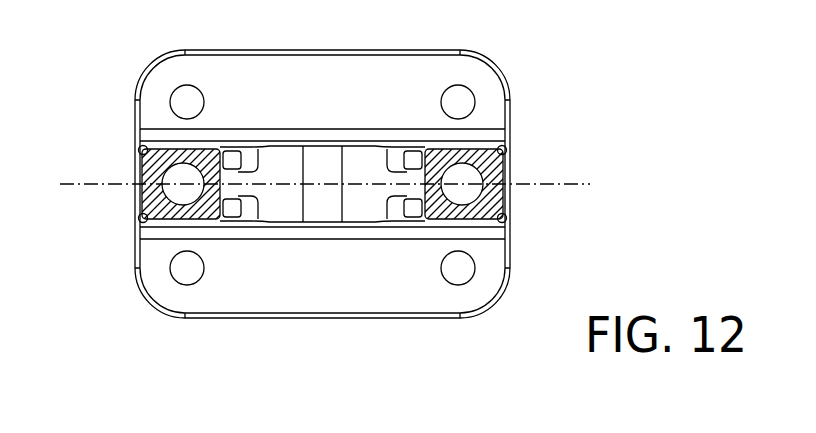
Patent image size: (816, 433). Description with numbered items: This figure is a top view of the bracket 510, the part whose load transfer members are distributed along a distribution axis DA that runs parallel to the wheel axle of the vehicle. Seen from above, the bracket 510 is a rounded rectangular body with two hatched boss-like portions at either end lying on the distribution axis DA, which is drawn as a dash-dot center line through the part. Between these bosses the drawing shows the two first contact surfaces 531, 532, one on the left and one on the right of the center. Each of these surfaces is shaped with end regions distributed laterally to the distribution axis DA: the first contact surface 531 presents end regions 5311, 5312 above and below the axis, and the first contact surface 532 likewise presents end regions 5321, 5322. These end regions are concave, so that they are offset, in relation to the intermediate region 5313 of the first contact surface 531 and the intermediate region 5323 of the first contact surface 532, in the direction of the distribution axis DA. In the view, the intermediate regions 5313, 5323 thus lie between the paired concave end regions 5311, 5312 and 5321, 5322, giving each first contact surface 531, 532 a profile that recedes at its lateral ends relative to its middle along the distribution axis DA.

The bracket 510 is at (490, 122).
The distribution axis DA is at (97, 183).
The first contact surface 531 is at (255, 177).
The end region 5311 is at (237, 165).
The end region 5312 is at (237, 213).
The intermediate region 5313 is at (249, 215).
The first contact surface 532 is at (403, 178).
The end region 5321 is at (406, 177).
The end region 5322 is at (401, 215).
The intermediate region 5323 is at (405, 208).